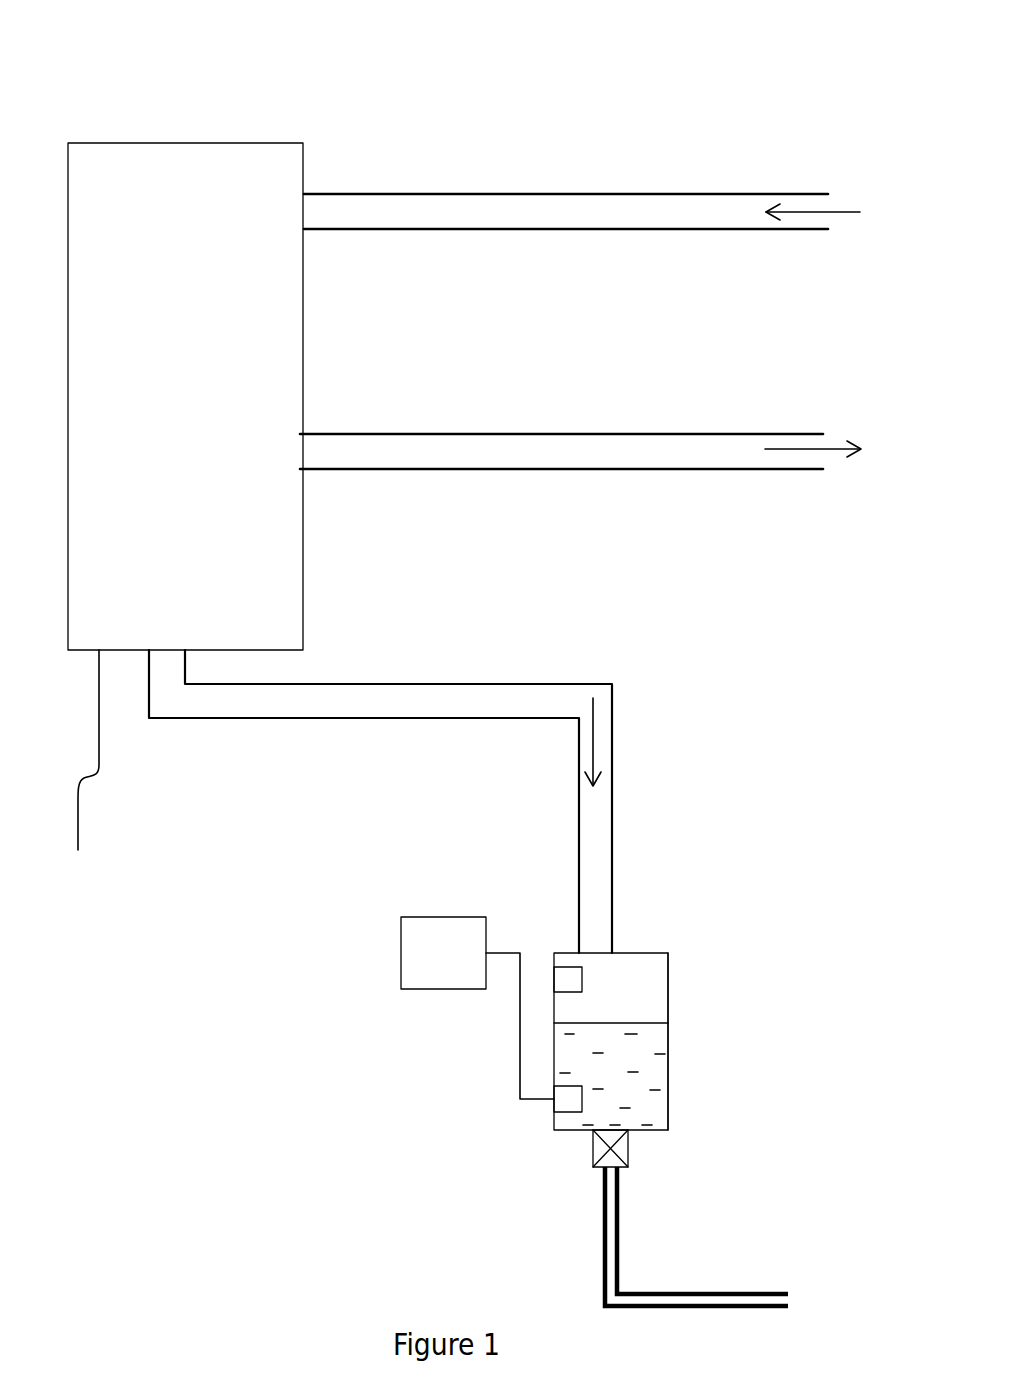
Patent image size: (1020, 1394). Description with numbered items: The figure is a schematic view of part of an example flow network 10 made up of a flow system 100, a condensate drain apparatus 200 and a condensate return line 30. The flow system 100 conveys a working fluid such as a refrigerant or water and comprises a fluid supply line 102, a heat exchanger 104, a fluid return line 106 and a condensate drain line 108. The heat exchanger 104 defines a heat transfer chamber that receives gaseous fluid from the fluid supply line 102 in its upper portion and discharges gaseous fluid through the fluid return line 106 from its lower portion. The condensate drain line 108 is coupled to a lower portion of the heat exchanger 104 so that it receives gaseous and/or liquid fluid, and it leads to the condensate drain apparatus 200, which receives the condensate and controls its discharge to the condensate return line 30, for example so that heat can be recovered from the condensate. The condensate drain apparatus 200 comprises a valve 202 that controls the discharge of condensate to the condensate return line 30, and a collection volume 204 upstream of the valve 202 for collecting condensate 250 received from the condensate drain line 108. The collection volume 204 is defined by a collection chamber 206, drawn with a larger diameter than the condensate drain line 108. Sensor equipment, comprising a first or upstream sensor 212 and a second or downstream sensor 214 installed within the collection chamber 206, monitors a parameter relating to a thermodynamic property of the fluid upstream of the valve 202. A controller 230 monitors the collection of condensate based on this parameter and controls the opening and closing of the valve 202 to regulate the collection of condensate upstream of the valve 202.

The flow network 10 is at (229, 34).
The flow system 100 is at (535, 158).
The fluid supply line 102 is at (617, 229).
The heat exchanger 104 is at (75, 768).
The fluid return line 106 is at (670, 469).
The condensate drain line 108 is at (579, 847).
The condensate drain apparatus 200 is at (689, 1038).
The valve 202 is at (593, 1152).
The collection volume 204 is at (620, 987).
The collection chamber 206 is at (668, 986).
The first sensor 212 is at (566, 967).
The second sensor 214 is at (554, 1109).
The controller 230 is at (397, 957).
The condensate 250 is at (653, 1077).
The condensate return line 30 is at (603, 1246).